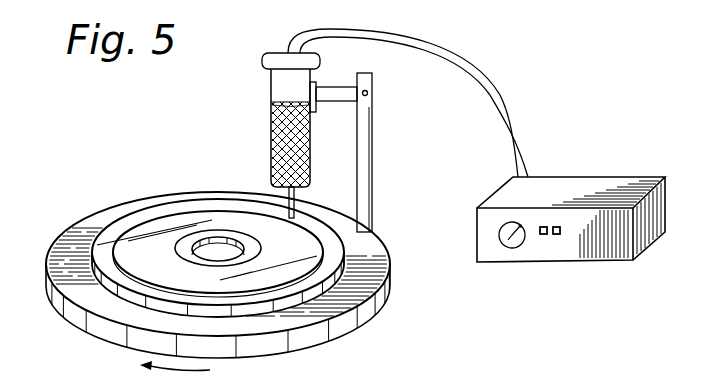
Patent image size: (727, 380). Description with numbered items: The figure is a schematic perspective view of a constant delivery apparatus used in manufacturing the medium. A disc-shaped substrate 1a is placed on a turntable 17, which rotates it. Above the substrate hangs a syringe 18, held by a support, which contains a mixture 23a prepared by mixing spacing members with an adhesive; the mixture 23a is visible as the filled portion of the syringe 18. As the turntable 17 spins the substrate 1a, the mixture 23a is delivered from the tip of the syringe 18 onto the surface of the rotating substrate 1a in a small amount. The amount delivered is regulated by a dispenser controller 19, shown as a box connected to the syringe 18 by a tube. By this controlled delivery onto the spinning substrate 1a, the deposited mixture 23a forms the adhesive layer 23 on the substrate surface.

The substrate 1a is at (107, 228).
The turntable 17 is at (75, 317).
The syringe 18 is at (270, 81).
The dispenser controller 19 is at (575, 253).
The adhesive layer 23 is at (143, 221).
The mixture 23a is at (280, 140).